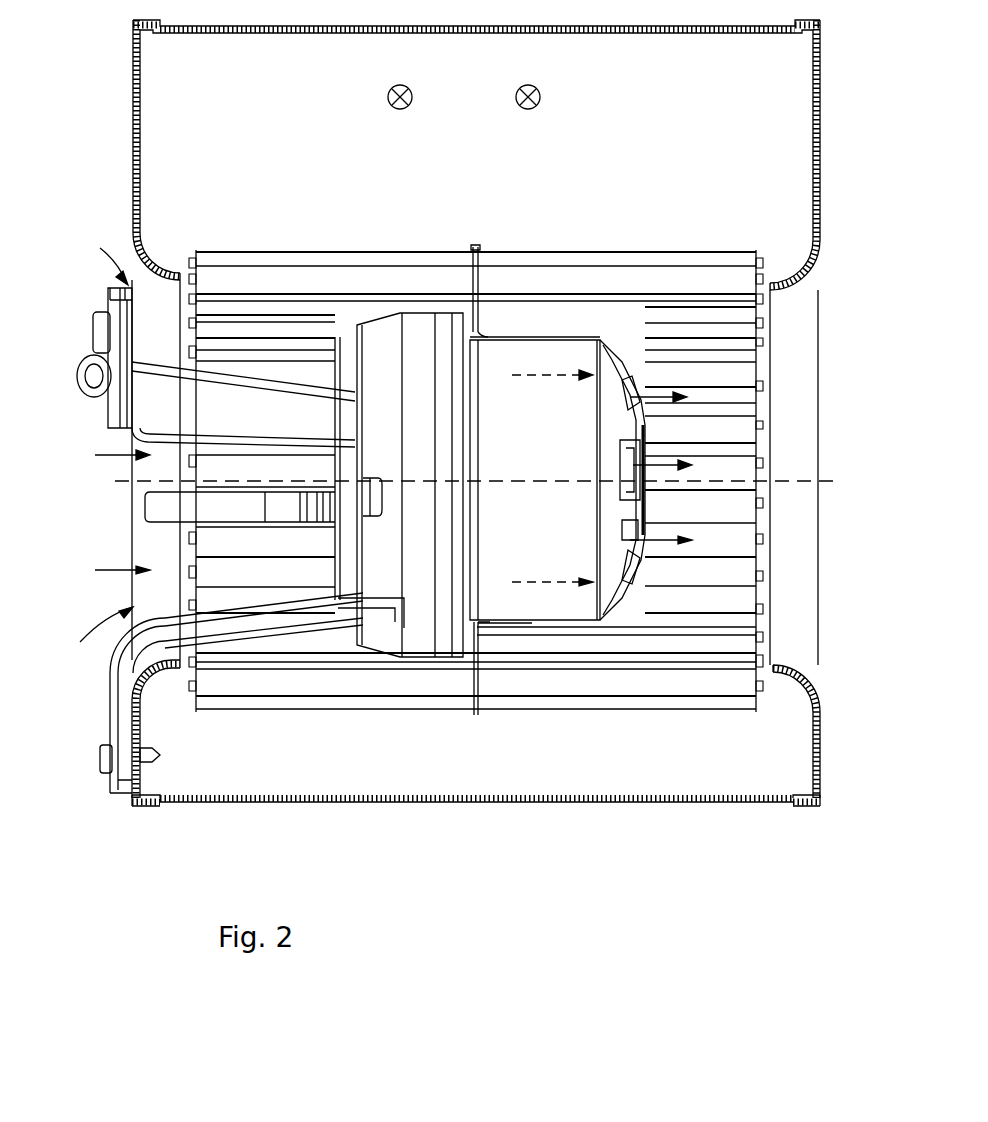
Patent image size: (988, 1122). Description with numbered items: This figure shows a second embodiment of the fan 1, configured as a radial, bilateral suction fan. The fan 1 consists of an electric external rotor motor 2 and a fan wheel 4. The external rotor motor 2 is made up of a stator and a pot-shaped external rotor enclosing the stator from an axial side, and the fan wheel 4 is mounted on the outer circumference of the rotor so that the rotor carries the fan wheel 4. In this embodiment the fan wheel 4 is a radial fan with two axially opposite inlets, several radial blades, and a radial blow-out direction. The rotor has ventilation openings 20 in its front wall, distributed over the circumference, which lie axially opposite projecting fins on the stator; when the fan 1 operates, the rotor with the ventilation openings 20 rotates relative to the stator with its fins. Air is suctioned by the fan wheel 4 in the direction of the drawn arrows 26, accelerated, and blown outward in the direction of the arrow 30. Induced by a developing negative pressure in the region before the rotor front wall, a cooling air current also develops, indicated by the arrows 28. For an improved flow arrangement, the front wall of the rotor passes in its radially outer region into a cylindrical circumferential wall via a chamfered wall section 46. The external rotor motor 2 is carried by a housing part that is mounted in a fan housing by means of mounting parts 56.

The fan 1 is at (512, 870).
The electric external rotor motor 2 is at (573, 627).
The fan wheel 4 is at (738, 255).
The ventilation openings 20 is at (628, 447).
The arrows 26 is at (785, 315).
The arrows 28 is at (468, 322).
The arrow 30 is at (217, 312).
The chamfered wall section 46 is at (628, 538).
The mounting parts 56 is at (112, 423).